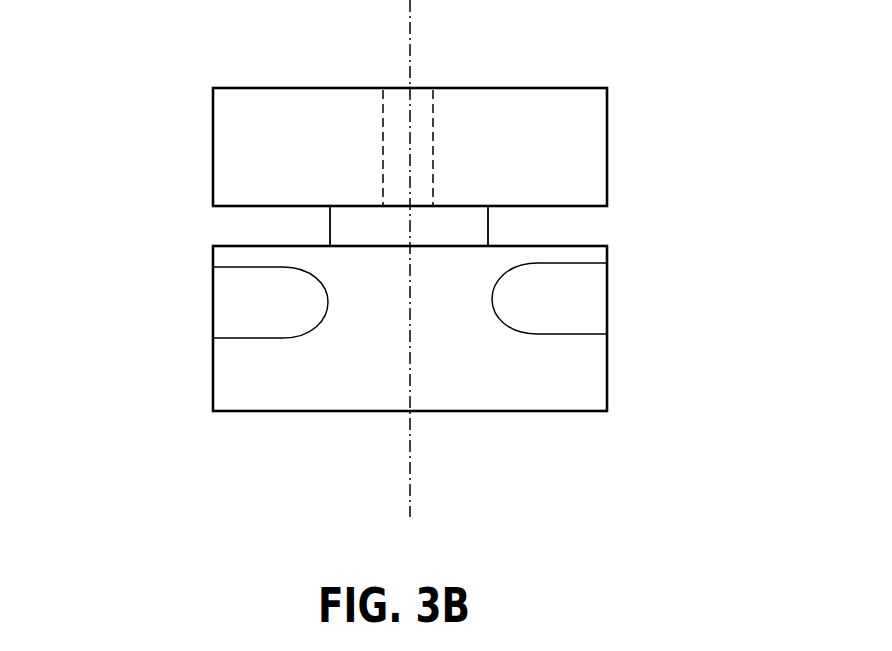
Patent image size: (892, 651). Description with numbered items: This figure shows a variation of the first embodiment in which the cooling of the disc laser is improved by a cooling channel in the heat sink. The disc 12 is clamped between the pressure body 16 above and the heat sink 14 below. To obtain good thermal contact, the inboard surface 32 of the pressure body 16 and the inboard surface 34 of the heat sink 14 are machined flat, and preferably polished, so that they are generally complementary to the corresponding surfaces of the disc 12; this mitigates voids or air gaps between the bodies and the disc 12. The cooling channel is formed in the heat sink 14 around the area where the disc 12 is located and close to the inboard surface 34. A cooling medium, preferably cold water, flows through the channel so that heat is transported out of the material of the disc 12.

The disc 12 is at (488, 224).
The heat sink 14 is at (343, 411).
The pressure body 16 is at (607, 152).
The inboard surface 32 is at (350, 206).
The inboard surface 34 is at (442, 246).